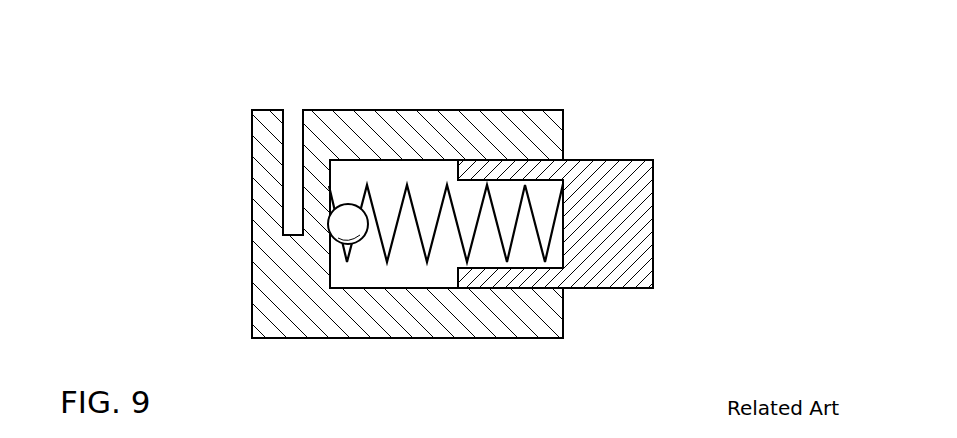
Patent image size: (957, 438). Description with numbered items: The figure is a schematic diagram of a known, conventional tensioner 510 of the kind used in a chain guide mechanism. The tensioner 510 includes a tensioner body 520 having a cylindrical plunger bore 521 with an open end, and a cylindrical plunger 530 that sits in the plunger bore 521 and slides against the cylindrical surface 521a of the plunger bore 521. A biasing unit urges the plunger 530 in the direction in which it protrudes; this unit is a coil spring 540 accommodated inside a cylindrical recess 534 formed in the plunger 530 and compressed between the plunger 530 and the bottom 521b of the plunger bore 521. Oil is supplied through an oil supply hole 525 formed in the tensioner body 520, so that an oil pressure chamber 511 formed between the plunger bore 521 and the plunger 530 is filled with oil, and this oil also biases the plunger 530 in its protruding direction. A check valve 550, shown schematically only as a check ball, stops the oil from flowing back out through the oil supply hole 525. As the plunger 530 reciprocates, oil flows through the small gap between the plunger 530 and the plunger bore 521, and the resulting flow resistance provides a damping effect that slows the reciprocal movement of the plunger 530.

The tensioner 510 is at (622, 78).
The oil pressure chamber 511 is at (407, 248).
The tensioner body 520 is at (353, 318).
The plunger bore 521 is at (445, 49).
The cylindrical surface 521a is at (444, 164).
The bottom 521b is at (332, 178).
The oil supply hole 525 is at (293, 108).
The plunger 530 is at (640, 245).
The cylindrical recess 534 is at (522, 186).
The coil spring 540 is at (513, 236).
The check valve 550 is at (328, 222).